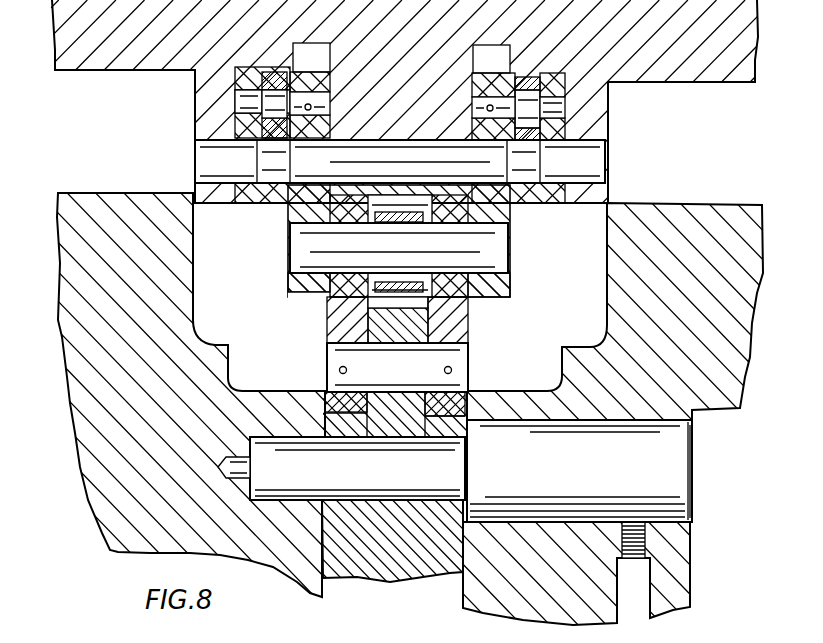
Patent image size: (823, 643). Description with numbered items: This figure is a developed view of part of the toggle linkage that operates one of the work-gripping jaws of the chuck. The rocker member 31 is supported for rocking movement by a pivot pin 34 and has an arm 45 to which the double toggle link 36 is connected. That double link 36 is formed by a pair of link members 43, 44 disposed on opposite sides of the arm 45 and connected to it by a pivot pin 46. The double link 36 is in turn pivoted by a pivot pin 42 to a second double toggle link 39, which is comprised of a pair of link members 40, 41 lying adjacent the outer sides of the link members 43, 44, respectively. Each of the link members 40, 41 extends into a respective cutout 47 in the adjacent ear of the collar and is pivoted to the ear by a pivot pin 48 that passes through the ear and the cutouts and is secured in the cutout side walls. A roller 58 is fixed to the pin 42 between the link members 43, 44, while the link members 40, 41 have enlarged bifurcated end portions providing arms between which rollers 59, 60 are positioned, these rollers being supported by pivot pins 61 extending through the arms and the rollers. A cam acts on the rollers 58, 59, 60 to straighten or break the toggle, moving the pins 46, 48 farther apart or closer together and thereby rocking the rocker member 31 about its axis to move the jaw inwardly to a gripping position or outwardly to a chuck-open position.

The rocker member 31 is at (392, 565).
The pivot pin 34 is at (357, 476).
The double toggle link 36 is at (325, 312).
The double toggle link 39 is at (288, 209).
The link member 40 is at (290, 285).
The link member 41 is at (500, 290).
The pivot pin 42 is at (493, 243).
The link member 43 is at (330, 334).
The link member 44 is at (465, 340).
The arm 45 is at (469, 426).
The pivot pin 46 is at (460, 370).
The cutout 47 is at (246, 101).
The pivot pin 48 is at (587, 163).
The roller 58 is at (428, 297).
The roller 59 is at (272, 72).
The roller 60 is at (556, 56).
The pivot pin 61 is at (256, 111).